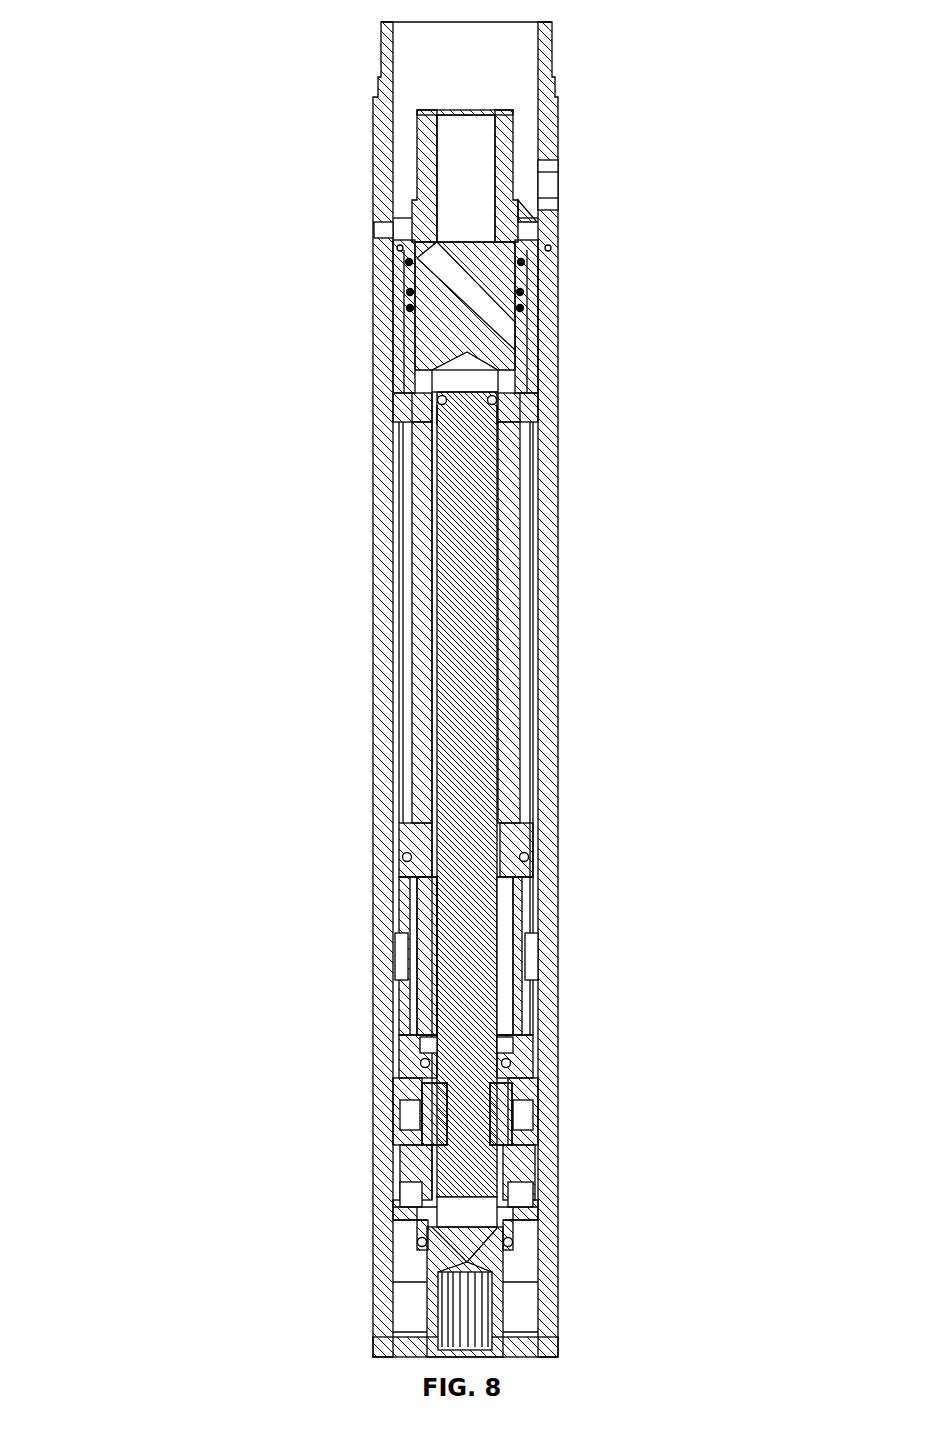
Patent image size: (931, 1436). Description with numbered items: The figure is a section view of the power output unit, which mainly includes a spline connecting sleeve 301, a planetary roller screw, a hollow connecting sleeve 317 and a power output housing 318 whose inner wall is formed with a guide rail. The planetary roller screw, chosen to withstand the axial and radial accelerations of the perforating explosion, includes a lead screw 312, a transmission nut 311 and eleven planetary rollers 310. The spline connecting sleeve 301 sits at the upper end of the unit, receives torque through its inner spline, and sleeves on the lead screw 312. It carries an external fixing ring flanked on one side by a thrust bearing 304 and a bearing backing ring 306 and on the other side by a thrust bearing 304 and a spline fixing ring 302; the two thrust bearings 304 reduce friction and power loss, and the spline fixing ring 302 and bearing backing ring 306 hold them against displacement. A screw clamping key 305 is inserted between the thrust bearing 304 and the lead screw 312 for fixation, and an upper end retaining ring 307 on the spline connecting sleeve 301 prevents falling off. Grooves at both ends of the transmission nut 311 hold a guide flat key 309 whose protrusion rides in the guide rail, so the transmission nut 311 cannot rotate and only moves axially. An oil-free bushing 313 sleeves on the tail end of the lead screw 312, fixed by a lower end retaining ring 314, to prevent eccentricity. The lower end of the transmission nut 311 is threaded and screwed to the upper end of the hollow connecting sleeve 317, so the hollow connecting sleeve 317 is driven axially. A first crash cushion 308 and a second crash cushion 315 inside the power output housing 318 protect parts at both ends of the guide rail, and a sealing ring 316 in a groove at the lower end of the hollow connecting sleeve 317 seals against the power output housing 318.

The spline connecting sleeve 301 is at (505, 1262).
The spline fixing ring 302 is at (423, 1237).
The thrust bearing 304 is at (505, 1117).
The screw clamping key 305 is at (420, 1112).
The bearing backing ring 306 is at (540, 1090).
The upper end retaining ring 307 is at (514, 1061).
The first crash cushion 308 is at (559, 400).
The guide flat key 309 is at (400, 946).
The planetary roller 310 is at (503, 935).
The transmission nut 311 is at (406, 900).
The lead screw 312 is at (472, 723).
The oil-free bushing 313 is at (432, 420).
The lower end retaining ring 314 is at (404, 392).
The second crash cushion 315 is at (410, 1055).
The sealing ring 316 is at (559, 272).
The hollow connecting sleeve 317 is at (516, 218).
The power output housing 318 is at (376, 165).